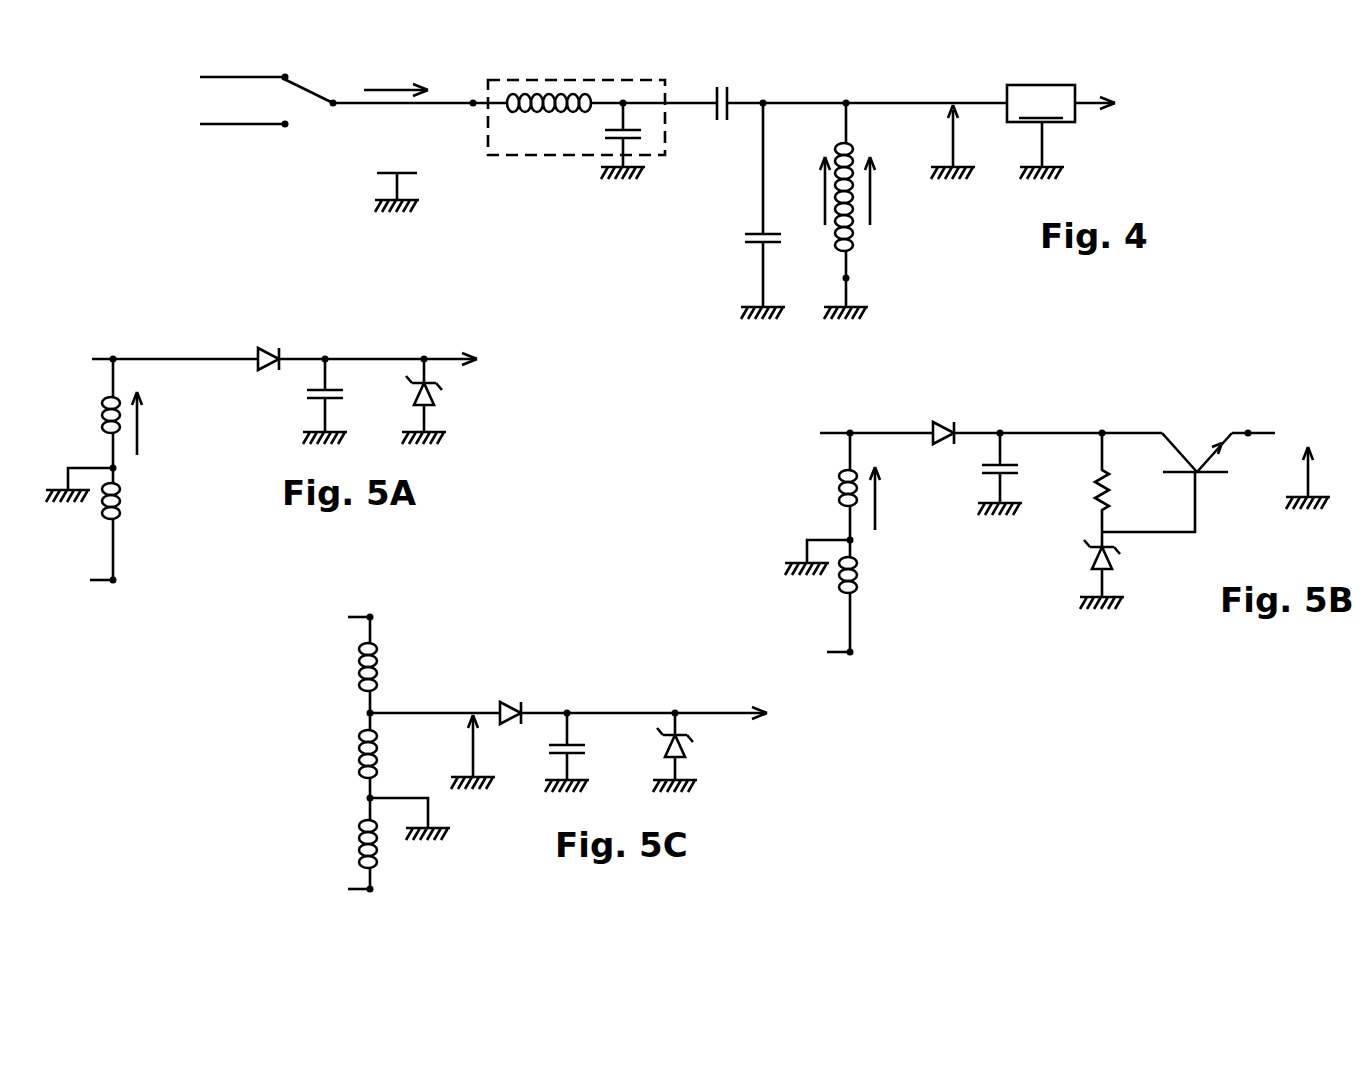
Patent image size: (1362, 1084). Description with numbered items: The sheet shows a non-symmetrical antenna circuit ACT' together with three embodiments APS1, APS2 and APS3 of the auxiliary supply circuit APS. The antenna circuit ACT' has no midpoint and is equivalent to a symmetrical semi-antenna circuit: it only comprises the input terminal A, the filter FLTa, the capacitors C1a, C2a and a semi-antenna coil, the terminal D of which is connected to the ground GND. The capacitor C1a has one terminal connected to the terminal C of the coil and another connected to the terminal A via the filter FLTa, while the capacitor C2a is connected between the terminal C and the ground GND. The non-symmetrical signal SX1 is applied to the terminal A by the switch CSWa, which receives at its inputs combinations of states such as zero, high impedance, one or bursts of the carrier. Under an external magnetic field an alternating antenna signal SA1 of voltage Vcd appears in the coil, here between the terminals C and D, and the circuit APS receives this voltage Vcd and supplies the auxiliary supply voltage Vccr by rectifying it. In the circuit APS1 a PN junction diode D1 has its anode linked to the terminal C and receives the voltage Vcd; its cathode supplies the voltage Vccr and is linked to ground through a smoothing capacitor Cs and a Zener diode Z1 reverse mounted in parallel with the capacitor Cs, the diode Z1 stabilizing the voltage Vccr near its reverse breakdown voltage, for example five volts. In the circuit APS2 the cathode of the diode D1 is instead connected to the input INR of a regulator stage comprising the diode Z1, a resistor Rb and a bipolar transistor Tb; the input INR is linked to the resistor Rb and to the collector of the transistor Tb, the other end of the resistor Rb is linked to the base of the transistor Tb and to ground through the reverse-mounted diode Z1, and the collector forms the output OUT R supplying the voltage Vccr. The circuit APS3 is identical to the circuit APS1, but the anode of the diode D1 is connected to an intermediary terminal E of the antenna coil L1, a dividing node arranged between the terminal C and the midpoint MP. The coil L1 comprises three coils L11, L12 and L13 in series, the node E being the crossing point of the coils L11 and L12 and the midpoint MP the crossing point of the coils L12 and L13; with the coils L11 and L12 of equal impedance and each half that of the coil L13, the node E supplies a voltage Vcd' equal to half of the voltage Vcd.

In FIG. 4, the switch CSWa is at (305, 92).
In FIG. 4, the signal SX1 is at (396, 78).
In FIG. 4, the input terminal A is at (472, 108).
In FIG. 4, the filter FLTa is at (528, 156).
In FIG. 4, the ground GND is at (382, 186).
In FIG. 5A, the ground GND is at (442, 432).
In FIG. 5B, the ground GND is at (993, 500).
In FIG. 5C, the ground GND is at (692, 775).
In FIG. 4, the capacitor C1a is at (713, 94).
In FIG. 4, the capacitor C2a is at (751, 248).
In FIG. 4, the terminal C is at (845, 90).
In FIG. 5A, the terminal C is at (112, 346).
In FIG. 5B, the terminal C is at (849, 420).
In FIG. 5C, the terminal C is at (362, 604).
In FIG. 4, the terminal D is at (857, 280).
In FIG. 5A, the terminal D is at (113, 581).
In FIG. 5B, the terminal D is at (851, 653).
In FIG. 5C, the terminal D is at (371, 890).
In FIG. 4, the antenna circuit ACT' is at (867, 67).
In FIG. 4, the alternating antenna signal SA1 is at (803, 191).
In FIG. 4, the voltage Vcd is at (889, 191).
In FIG. 5A, the voltage Vcd is at (155, 423).
In FIG. 5B, the voltage Vcd is at (893, 498).
In FIG. 5C, the voltage Vcd' is at (489, 752).
In FIG. 5A, the antenna coil L1 is at (105, 410).
In FIG. 5B, the antenna coil L1 is at (840, 486).
In FIG. 5C, the antenna coil L1 is at (339, 665).
In FIG. 5C, the coil L11 is at (385, 660).
In FIG. 5C, the coil L12 is at (360, 762).
In FIG. 5C, the coil L13 is at (360, 848).
In FIG. 4, the auxiliary supply circuit APS is at (1041, 126).
In FIG. 5A, the auxiliary supply circuit APS1 is at (204, 333).
In FIG. 5B, the auxiliary supply circuit APS2 is at (1153, 391).
In FIG. 5C, the auxiliary supply circuit APS3 is at (637, 684).
In FIG. 4, the auxiliary supply voltage Vccr is at (1122, 103).
In FIG. 5A, the auxiliary supply voltage Vccr is at (496, 359).
In FIG. 5B, the auxiliary supply voltage Vccr is at (1280, 433).
In FIG. 5C, the auxiliary supply voltage Vccr is at (788, 713).
In FIG. 5A, the PN junction diode D1 is at (268, 352).
In FIG. 5B, the PN junction diode D1 is at (942, 424).
In FIG. 5C, the PN junction diode D1 is at (507, 698).
In FIG. 5A, the smoothing capacitor Cs is at (343, 396).
In FIG. 5B, the smoothing capacitor Cs is at (1018, 470).
In FIG. 5C, the smoothing capacitor Cs is at (585, 751).
In FIG. 5A, the Zener diode Z1 is at (440, 393).
In FIG. 5B, the Zener diode Z1 is at (1118, 565).
In FIG. 5C, the Zener diode Z1 is at (692, 748).
In FIG. 5B, the input INR is at (1002, 426).
In FIG. 5B, the output OUT R is at (1247, 432).
In FIG. 5B, the resistor Rb is at (1093, 508).
In FIG. 5B, the bipolar transistor Tb is at (1212, 476).
In FIG. 5B, the midpoint MP is at (852, 540).
In FIG. 5C, the midpoint MP is at (362, 800).
In FIG. 5C, the intermediary terminal E is at (365, 713).